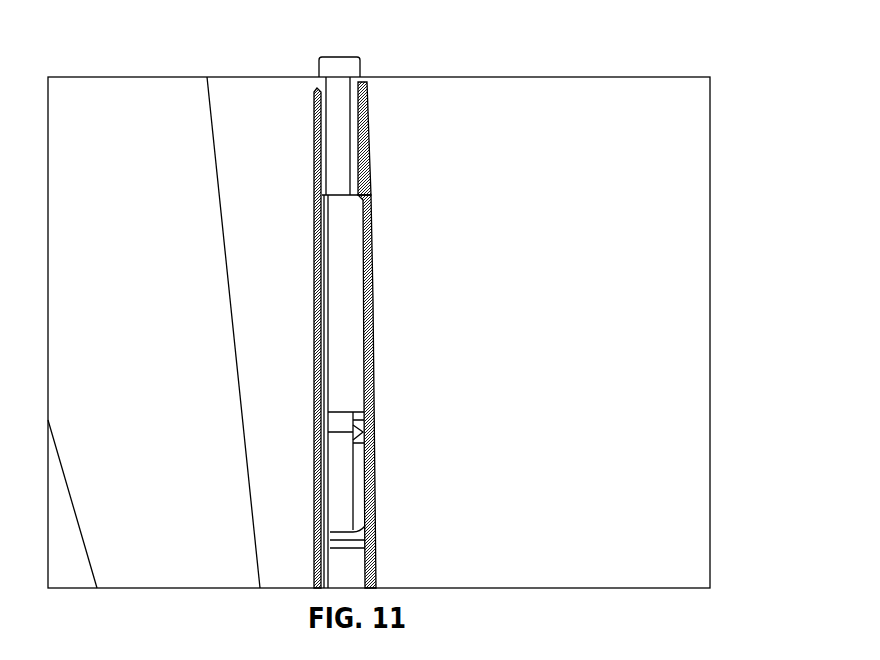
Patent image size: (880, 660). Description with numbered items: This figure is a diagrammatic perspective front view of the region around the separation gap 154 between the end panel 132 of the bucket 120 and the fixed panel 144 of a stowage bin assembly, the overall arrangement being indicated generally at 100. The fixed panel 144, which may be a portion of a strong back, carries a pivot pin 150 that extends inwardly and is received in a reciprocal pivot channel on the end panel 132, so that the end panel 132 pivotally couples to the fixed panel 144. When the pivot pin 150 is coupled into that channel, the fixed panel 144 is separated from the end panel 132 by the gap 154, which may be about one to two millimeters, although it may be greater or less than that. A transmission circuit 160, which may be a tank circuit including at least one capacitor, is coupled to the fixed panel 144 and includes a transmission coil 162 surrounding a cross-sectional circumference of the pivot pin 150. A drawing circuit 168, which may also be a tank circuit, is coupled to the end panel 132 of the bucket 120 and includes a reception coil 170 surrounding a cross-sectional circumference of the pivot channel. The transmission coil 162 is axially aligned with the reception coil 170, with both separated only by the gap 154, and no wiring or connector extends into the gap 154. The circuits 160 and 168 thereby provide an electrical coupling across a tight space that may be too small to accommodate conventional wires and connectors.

The assembly 100 is at (597, 44).
The bucket 120 is at (518, 90).
The end panel 132 is at (378, 573).
The fixed panel 144 is at (240, 85).
The pivot pin 150 is at (333, 193).
The separation gap 154 is at (340, 57).
The transmission circuit 160 is at (313, 170).
The transmission coil 162 is at (314, 133).
The drawing circuit 168 is at (368, 106).
The reception coil 170 is at (368, 143).